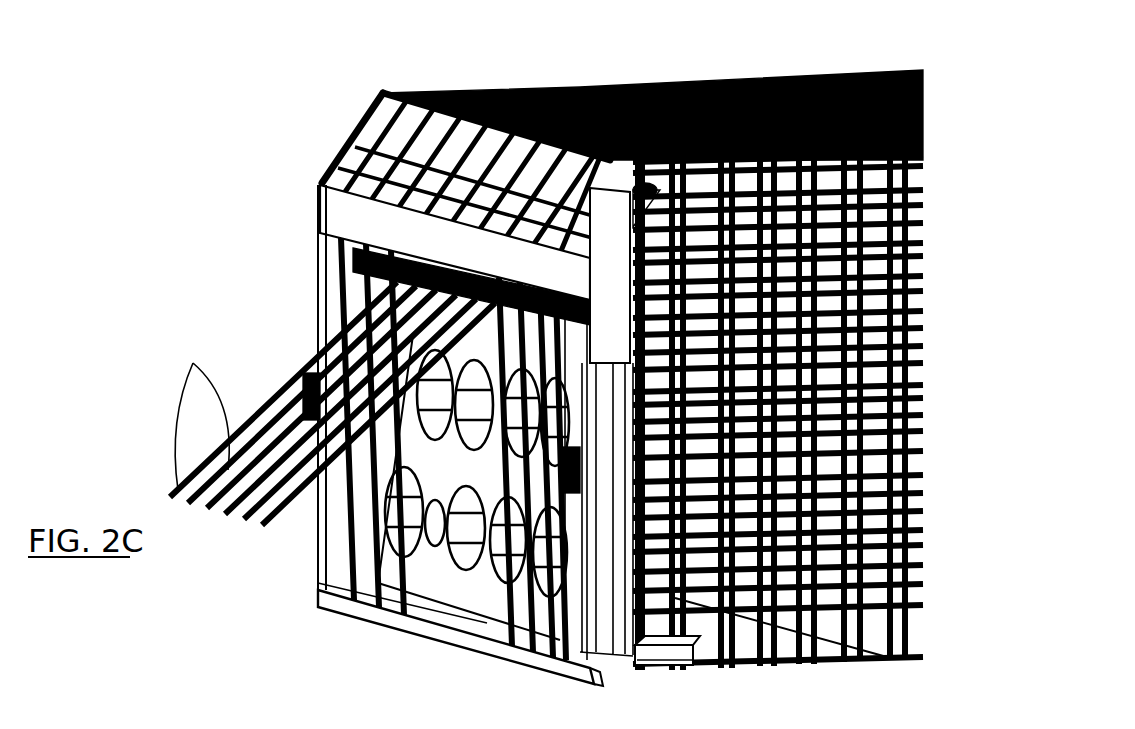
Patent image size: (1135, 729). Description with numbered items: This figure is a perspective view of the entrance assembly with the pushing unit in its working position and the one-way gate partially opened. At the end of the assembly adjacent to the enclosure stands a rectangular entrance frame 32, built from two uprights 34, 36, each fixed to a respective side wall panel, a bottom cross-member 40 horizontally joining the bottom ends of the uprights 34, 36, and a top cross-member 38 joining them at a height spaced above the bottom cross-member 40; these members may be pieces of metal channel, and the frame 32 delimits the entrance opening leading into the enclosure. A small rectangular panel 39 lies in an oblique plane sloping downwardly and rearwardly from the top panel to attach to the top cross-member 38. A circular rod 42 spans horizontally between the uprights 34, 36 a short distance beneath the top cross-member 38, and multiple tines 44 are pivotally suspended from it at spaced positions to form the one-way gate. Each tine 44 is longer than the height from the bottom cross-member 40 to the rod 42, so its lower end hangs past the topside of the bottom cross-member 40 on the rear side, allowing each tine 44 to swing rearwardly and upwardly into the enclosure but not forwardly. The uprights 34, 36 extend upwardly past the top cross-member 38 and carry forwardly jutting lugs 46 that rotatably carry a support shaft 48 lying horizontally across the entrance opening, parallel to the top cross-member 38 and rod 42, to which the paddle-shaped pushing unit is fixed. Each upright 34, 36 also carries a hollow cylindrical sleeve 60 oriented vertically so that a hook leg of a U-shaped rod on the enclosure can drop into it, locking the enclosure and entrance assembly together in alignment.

The entrance frame 32 is at (305, 258).
The upright 34 is at (633, 647).
The upright 36 is at (320, 573).
The top cross-member 38 is at (340, 213).
The rectangular panel 39 is at (353, 142).
The bottom cross-member 40 is at (400, 622).
The circular rod 42 is at (355, 268).
The tines 44 is at (193, 363).
The lugs 46 is at (613, 180).
The support shaft 48 is at (680, 157).
The hollow cylindrical sleeve 60 is at (302, 384).